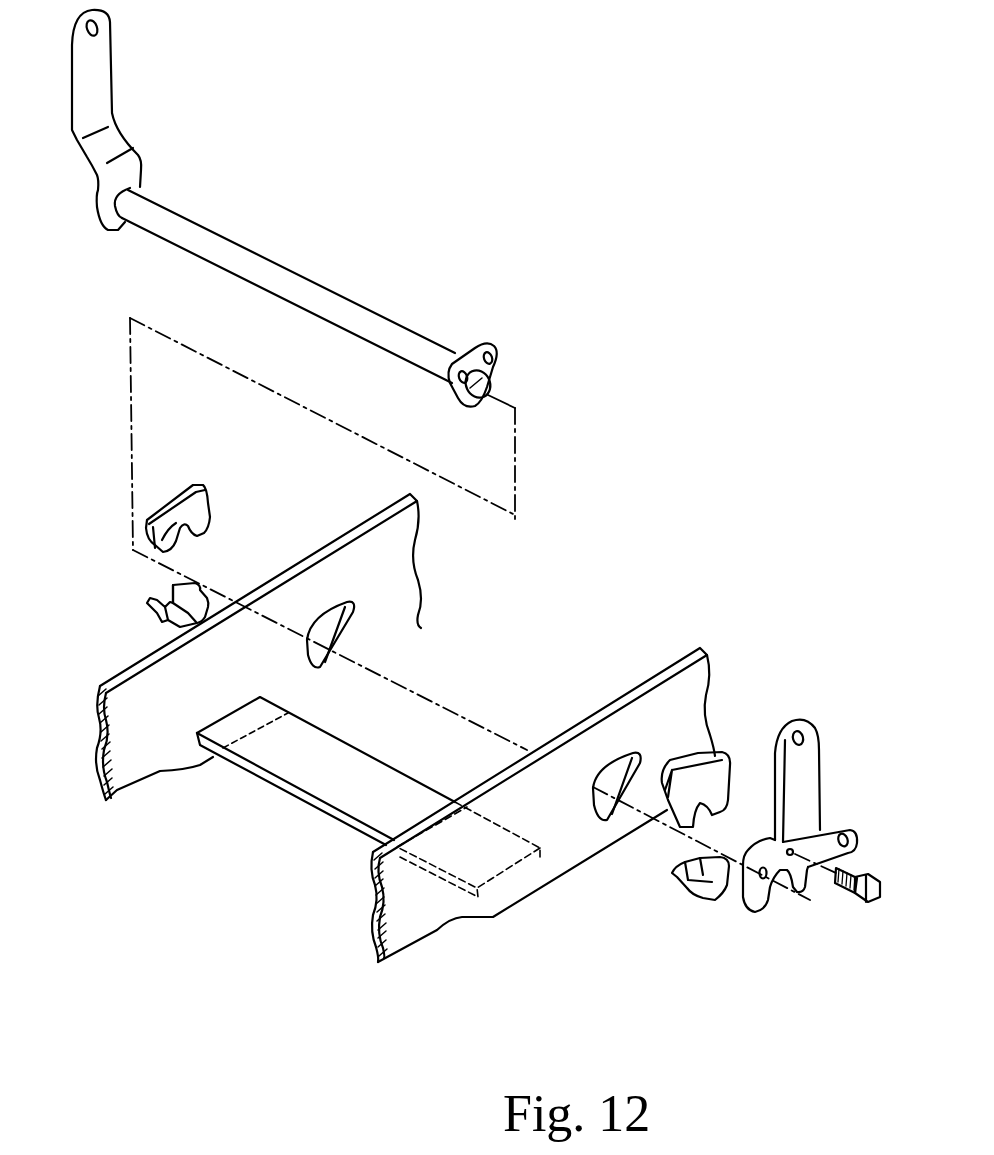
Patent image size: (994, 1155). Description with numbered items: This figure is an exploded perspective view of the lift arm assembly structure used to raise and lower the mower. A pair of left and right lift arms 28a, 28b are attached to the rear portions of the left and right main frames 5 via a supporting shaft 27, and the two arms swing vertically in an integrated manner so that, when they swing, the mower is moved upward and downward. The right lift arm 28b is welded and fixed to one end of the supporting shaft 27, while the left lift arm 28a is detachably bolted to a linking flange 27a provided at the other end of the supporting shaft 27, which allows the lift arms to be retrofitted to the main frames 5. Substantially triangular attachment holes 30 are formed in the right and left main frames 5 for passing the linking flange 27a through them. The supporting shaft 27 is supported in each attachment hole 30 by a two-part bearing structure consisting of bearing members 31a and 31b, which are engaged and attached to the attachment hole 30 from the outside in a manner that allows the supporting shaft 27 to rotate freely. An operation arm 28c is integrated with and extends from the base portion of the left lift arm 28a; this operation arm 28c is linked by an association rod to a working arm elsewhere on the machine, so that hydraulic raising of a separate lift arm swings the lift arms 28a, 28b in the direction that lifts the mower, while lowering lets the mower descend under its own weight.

The main frame 5 is at (142, 767).
The supporting shaft 27 is at (300, 282).
The linking flange 27a is at (500, 365).
The left lift arm 28a is at (813, 737).
The right lift arm 28b is at (108, 80).
The operation arm 28c is at (842, 823).
The attachment hole 30 is at (353, 625).
The bearing member 31a is at (180, 502).
The bearing member 31b is at (155, 607).